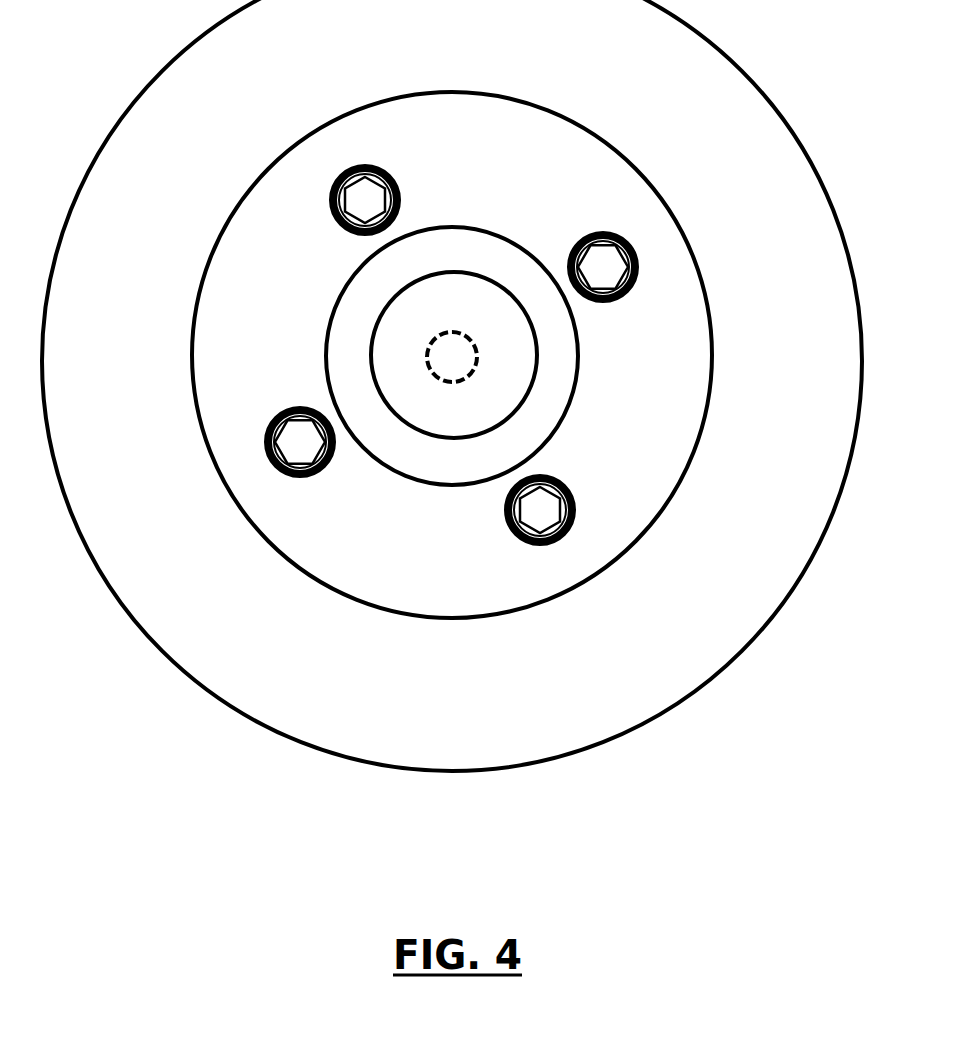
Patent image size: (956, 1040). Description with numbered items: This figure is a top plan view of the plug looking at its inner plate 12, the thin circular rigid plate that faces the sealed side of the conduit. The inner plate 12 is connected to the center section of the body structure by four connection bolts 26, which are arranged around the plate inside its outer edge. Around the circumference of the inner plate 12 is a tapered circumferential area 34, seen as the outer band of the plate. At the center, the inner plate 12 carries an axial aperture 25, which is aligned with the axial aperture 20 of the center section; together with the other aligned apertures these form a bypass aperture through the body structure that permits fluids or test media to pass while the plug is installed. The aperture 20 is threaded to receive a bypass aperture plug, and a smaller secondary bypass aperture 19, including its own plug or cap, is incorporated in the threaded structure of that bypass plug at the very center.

The inner plate 12 is at (150, 673).
The tapered circumferential area 34 is at (637, 685).
The axial aperture 25 is at (548, 398).
The axial aperture 20 is at (500, 357).
The secondary bypass aperture 19 is at (451, 357).
The connection bolts 26 is at (360, 199).